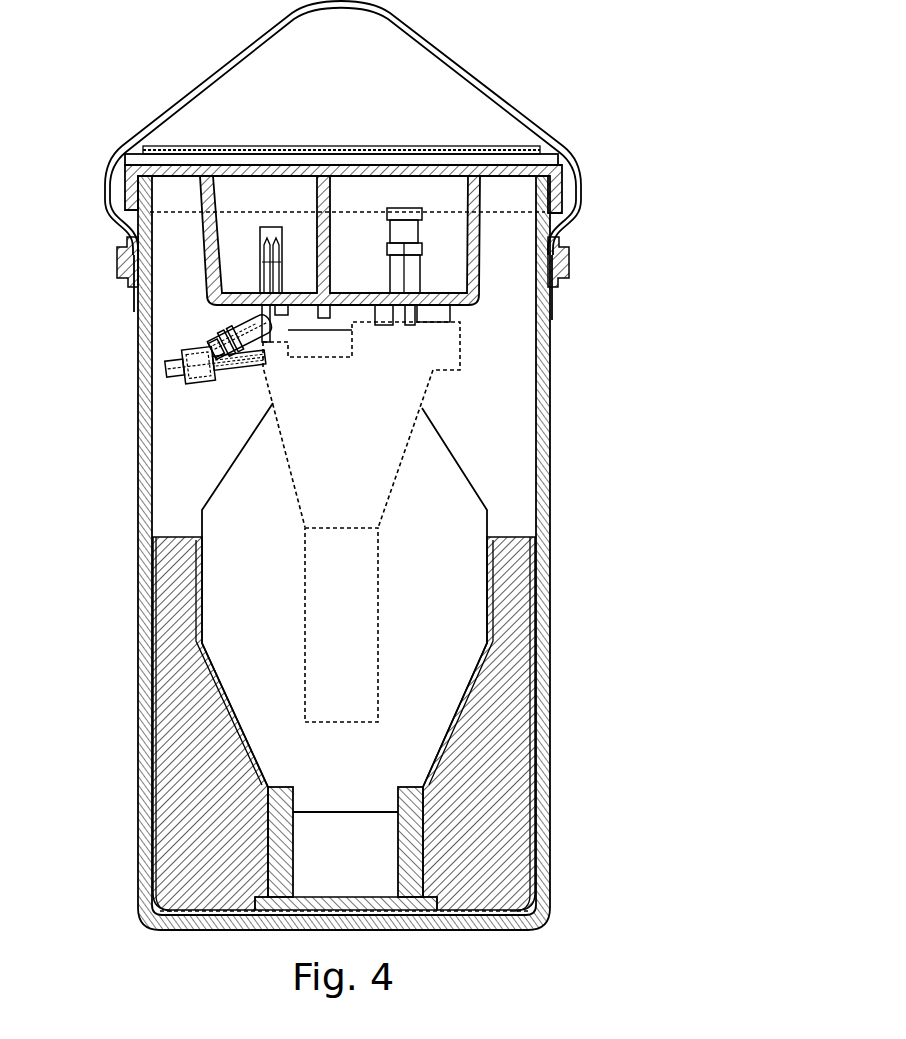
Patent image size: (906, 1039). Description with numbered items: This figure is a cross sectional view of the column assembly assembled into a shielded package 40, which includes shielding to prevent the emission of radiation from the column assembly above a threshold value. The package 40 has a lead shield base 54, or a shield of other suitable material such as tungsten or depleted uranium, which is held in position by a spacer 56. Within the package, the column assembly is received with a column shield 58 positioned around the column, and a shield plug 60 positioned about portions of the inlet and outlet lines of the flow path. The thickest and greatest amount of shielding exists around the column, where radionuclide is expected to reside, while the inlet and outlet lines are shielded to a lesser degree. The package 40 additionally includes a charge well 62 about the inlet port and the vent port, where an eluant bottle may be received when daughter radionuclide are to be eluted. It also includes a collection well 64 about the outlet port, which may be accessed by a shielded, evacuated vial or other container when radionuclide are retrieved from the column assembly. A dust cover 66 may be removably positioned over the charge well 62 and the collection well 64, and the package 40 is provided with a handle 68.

The package 40 is at (114, 388).
The lead shield base 54 is at (470, 627).
The spacer 56 is at (520, 703).
The column shield 58 is at (380, 573).
The shield plug 60 is at (412, 402).
The charge well 62 is at (223, 190).
The collection well 64 is at (452, 250).
The dust cover 66 is at (505, 142).
The handle 68 is at (462, 70).